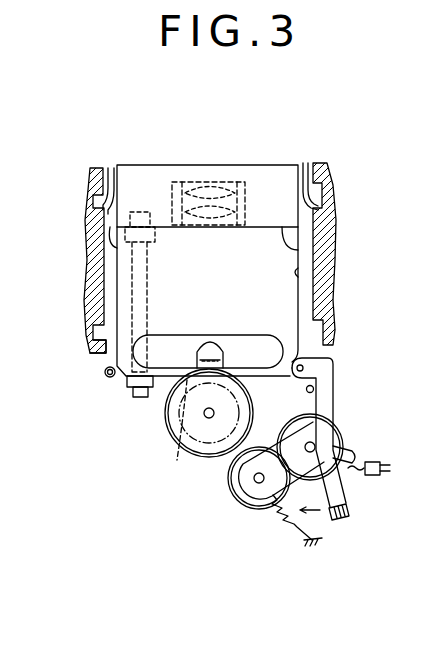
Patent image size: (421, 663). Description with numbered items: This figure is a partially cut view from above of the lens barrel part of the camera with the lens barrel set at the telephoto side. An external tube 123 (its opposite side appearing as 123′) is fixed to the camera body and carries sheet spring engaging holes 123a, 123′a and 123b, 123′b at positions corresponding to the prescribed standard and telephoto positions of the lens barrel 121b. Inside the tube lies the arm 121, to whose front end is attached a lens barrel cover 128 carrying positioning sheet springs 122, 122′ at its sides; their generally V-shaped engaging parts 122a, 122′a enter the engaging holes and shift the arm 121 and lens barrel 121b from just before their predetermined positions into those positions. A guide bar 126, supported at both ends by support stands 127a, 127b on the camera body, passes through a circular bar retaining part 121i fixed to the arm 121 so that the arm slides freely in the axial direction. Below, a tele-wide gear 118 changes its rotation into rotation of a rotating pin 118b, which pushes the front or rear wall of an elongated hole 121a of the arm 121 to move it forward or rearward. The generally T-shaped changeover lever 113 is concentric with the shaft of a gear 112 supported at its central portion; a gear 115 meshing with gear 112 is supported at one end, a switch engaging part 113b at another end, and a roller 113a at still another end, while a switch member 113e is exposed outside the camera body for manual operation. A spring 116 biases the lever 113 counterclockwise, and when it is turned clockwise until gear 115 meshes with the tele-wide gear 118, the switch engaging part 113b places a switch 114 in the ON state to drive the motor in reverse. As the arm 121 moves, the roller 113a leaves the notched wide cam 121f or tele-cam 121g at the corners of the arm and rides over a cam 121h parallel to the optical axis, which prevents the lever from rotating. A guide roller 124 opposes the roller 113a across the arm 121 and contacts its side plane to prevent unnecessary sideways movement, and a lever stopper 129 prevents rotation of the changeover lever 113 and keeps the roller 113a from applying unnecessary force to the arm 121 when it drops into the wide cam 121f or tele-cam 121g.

The gear 112 is at (338, 425).
The changeover lever 113 is at (356, 447).
The roller 113a is at (305, 360).
The switch engaging part 113b is at (357, 452).
The switch member 113e is at (343, 521).
The switch 114 is at (372, 477).
The gear 115 is at (250, 506).
The spring 116 is at (293, 523).
The tele-wide gear 118 is at (216, 460).
The rotating pin 118b is at (177, 435).
The arm 121 is at (203, 270).
The elongated hole 121a is at (166, 378).
The lens barrel 121b is at (241, 210).
The wide cam 121f is at (335, 228).
The tele-cam 121g is at (318, 348).
The cam 121h is at (300, 273).
The bar retaining part 121i is at (93, 265).
The positioning sheet spring 122 is at (305, 200).
The engaging part 122a is at (327, 182).
The positioning sheet spring 122′ is at (112, 172).
The engaging part 122′a is at (97, 198).
The external tube 123 is at (333, 180).
The sheet spring engaging hole 123a is at (326, 205).
The sheet spring engaging hole 123b is at (336, 316).
The external tube 123′ is at (97, 170).
The sheet spring engaging hole 123′a is at (98, 190).
The sheet spring engaging hole 123′b is at (96, 347).
The guide roller 124 is at (107, 380).
The guide bar 126 is at (130, 303).
The support stand 127a is at (139, 212).
The support stand 127b is at (130, 390).
The lens barrel cover 128 is at (207, 165).
The lever stopper 129 is at (314, 389).